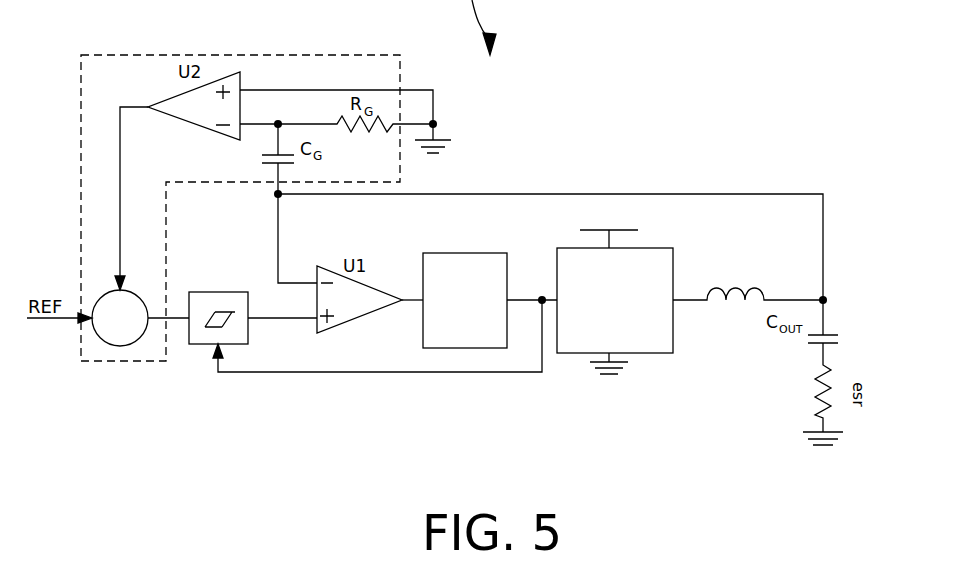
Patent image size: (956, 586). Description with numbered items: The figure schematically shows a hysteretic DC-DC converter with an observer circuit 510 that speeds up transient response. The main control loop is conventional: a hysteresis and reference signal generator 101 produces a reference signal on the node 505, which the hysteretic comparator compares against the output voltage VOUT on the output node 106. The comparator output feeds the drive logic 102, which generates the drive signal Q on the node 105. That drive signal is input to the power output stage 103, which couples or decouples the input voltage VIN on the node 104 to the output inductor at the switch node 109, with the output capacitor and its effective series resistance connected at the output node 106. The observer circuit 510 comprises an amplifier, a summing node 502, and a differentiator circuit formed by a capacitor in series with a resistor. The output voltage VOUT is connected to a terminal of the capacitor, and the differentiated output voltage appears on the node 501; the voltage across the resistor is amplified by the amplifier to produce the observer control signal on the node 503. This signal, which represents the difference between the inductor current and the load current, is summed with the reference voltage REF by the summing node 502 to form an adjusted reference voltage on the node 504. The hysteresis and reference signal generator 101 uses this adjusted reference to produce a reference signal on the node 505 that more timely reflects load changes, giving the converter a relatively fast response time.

The observer circuit 510 is at (240, 55).
The node 501 is at (271, 128).
The node 503 is at (120, 213).
The summing node 502 is at (118, 346).
The node 504 is at (178, 322).
The hysteresis and reference signal generator 101 is at (224, 292).
The node 505 is at (265, 322).
The drive logic 102 is at (435, 253).
The node 105 is at (542, 296).
The node 104 is at (612, 240).
The power output stage 103 is at (655, 353).
The switch node 109 is at (694, 302).
The output node 106 is at (815, 300).